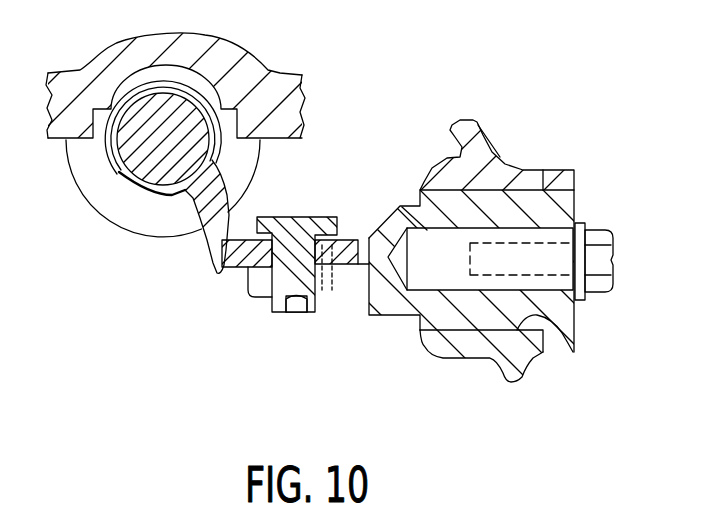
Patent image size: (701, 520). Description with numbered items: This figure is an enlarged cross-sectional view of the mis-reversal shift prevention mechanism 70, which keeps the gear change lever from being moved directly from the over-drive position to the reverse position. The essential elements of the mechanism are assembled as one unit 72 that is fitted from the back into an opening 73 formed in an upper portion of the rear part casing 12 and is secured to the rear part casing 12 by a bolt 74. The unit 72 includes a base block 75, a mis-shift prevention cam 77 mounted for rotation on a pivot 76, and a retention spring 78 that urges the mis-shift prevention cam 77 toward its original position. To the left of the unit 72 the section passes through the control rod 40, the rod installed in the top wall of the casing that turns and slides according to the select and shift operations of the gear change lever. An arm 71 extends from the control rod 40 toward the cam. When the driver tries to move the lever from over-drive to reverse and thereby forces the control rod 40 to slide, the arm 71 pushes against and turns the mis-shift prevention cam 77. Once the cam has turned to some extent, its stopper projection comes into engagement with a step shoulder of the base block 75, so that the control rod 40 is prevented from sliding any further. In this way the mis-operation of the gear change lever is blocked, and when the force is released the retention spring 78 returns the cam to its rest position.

The rear part casing 12 is at (478, 124).
The control rod 40 is at (119, 172).
The mis-reversal shift prevention mechanism 70 is at (243, 297).
The arm 71 is at (208, 240).
The unit 72 is at (393, 316).
The opening 73 is at (570, 350).
The bolt 74 is at (597, 227).
The base block 75 is at (369, 296).
The pivot 76 is at (305, 216).
The mis-shift prevention cam 77 is at (247, 268).
The retention spring 78 is at (325, 294).